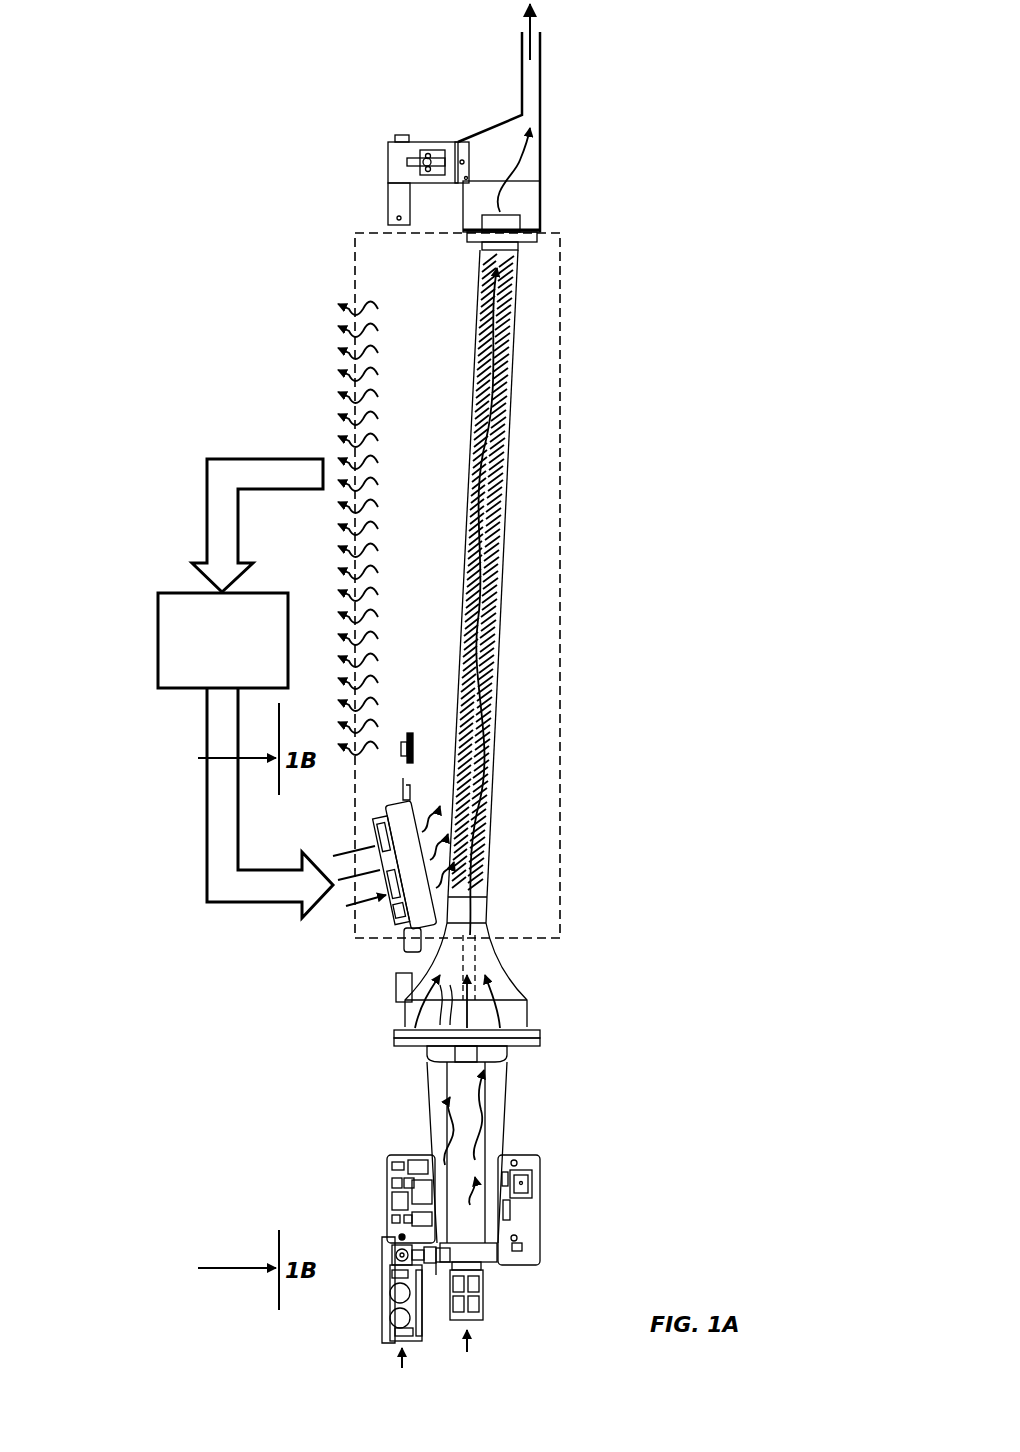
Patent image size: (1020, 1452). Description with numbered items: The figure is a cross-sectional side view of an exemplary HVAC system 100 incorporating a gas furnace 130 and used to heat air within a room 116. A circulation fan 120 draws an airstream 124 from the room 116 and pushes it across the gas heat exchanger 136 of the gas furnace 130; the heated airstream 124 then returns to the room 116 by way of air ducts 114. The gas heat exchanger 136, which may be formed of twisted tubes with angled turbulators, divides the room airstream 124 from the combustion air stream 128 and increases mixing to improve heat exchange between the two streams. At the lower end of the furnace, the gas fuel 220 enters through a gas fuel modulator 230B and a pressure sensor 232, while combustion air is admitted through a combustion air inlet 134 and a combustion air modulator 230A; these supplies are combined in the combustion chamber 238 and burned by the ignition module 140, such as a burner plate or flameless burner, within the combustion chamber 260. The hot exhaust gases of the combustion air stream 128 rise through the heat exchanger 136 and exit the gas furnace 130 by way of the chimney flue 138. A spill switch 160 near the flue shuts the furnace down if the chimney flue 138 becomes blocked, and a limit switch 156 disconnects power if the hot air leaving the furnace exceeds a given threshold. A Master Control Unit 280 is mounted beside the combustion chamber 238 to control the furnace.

The HVAC system 100 is at (205, 253).
The air ducts 114 is at (280, 458).
The room 116 is at (223, 640).
The circulation fan 120 is at (405, 921).
The airstream 124 is at (213, 541).
The combustion air stream 128 is at (494, 553).
The gas furnace 130 is at (578, 266).
The combustion air inlet 134 is at (472, 1350).
The gas heat exchanger 136 is at (508, 462).
The chimney flue 138 is at (538, 162).
The ignition module 140 is at (432, 1002).
The limit switch 156 is at (403, 750).
The spill switch 160 is at (423, 157).
The gas fuel 220 is at (397, 1362).
The combustion air modulator 230A is at (470, 1297).
The gas fuel modulator 230B is at (392, 1318).
The pressure sensor 232 is at (396, 1258).
The combustion chamber 238 is at (470, 1133).
The combustion chamber 260 is at (487, 1005).
The Master Control Unit 280 is at (416, 1160).